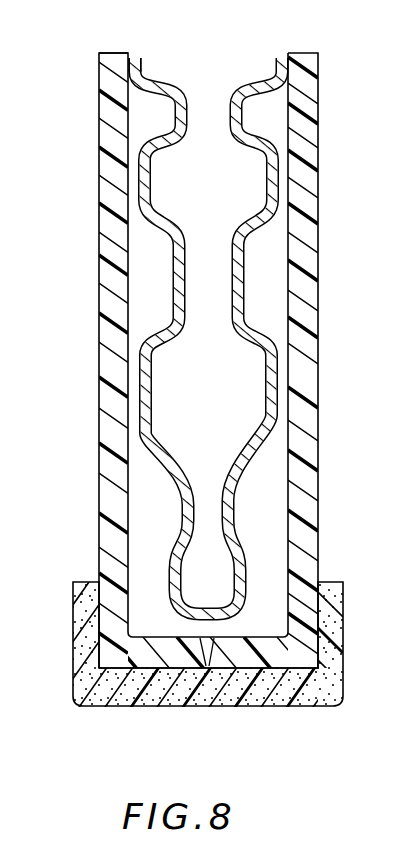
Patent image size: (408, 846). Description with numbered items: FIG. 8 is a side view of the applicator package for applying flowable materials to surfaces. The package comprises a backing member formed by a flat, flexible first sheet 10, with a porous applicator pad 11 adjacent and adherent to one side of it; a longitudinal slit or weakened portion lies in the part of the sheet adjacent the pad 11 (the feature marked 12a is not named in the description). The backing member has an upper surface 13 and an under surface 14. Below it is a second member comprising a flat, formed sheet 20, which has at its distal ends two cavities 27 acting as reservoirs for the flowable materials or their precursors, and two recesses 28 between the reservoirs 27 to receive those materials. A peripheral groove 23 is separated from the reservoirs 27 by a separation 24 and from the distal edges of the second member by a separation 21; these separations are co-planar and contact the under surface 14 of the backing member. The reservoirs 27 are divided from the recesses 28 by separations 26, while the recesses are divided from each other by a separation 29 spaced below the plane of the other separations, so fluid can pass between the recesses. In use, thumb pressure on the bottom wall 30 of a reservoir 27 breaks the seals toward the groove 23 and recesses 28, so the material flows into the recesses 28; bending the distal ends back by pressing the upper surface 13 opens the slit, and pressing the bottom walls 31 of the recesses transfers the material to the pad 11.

The first sheet 10 is at (185, 385).
The porous applicator pad 11 is at (161, 703).
The gate mark 12a is at (202, 668).
The upper surface 13 is at (101, 69).
The under surface 14 is at (128, 67).
The formed sheet 20 is at (112, 173).
The separation 21 is at (140, 69).
The groove 23 is at (168, 117).
The separation 24 is at (150, 184).
The separation 26 is at (273, 398).
The cavity 27 is at (147, 287).
The recess 28 is at (175, 507).
The separation 29 is at (236, 620).
The bottom wall 30 is at (183, 293).
The bottom wall 31 is at (217, 535).